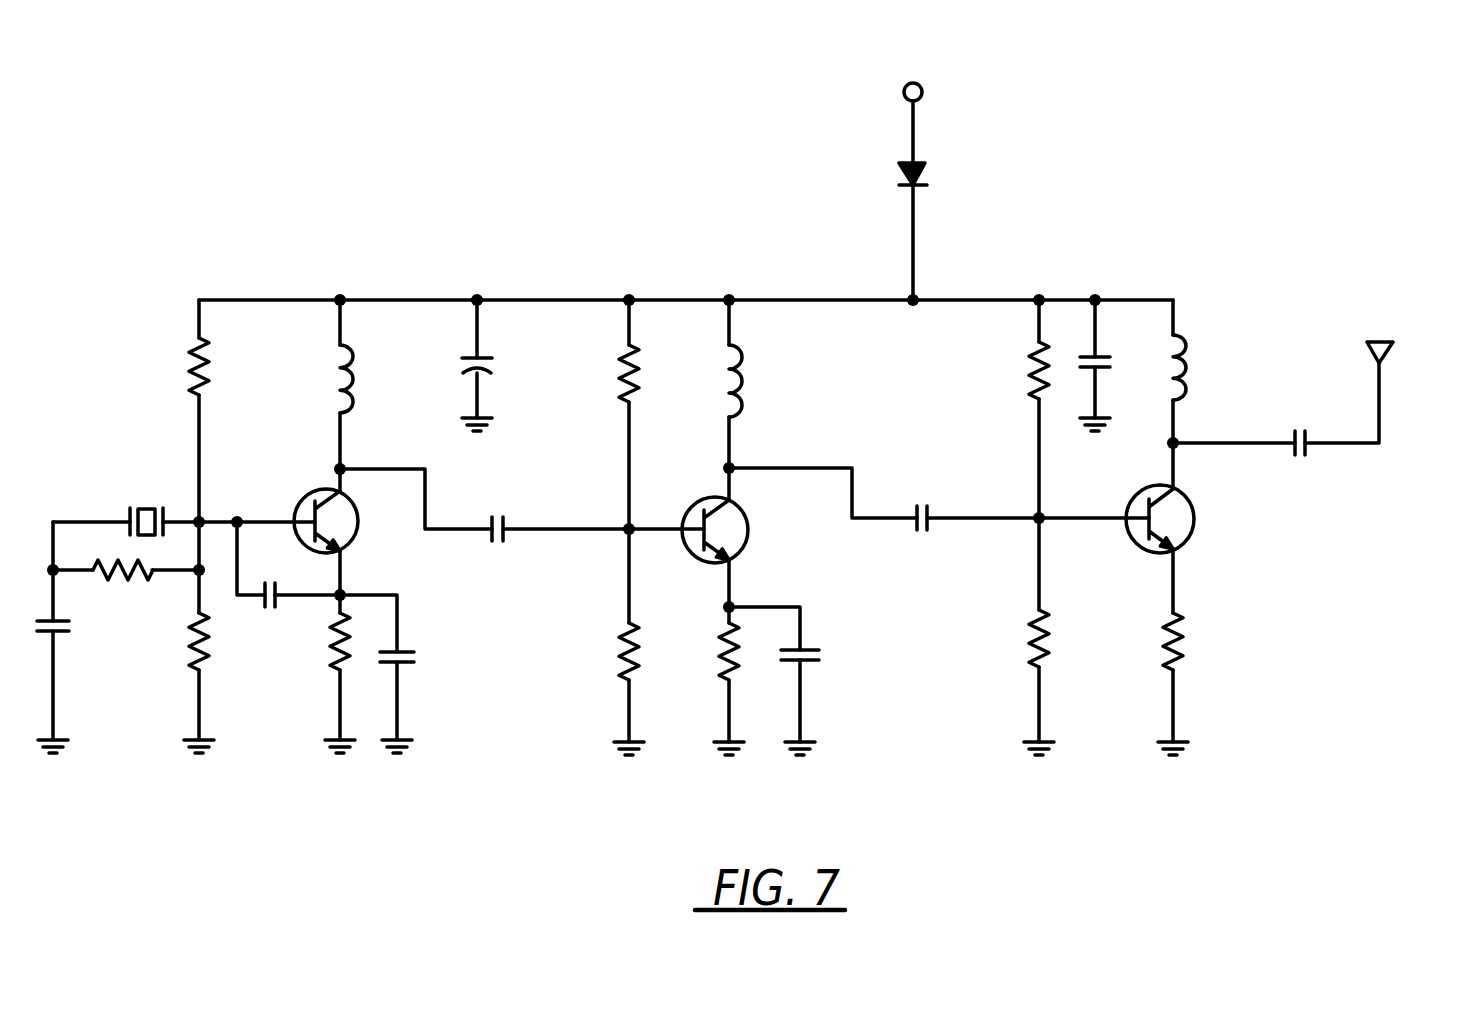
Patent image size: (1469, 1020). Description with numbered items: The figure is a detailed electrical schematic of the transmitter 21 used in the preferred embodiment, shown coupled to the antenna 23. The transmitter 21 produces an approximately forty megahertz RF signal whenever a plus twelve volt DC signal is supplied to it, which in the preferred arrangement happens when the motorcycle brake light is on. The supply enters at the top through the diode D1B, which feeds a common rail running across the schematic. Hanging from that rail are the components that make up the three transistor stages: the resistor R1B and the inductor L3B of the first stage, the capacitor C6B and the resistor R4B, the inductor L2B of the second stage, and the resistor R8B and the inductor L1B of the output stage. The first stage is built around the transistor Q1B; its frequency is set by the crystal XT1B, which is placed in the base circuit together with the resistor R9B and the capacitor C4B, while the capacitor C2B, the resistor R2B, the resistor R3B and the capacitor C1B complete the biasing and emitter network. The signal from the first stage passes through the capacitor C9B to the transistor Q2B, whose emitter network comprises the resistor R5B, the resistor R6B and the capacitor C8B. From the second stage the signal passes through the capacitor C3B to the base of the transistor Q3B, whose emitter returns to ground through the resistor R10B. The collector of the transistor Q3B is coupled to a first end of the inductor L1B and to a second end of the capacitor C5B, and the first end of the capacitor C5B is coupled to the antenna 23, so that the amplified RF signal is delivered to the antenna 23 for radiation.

The transmitter 21 is at (626, 157).
The antenna 23 is at (1380, 415).
The diode D1B is at (872, 179).
The resistor R1B is at (164, 366).
The inductor L3B is at (308, 379).
The capacitor C6B is at (506, 377).
The resistor R4B is at (597, 378).
The inductor L2B is at (779, 381).
The resistor R8B is at (998, 369).
The inductor L1B is at (1221, 364).
The capacitor C5B is at (1301, 425).
The crystal XT1B is at (126, 499).
The transistor Q1B is at (354, 530).
The capacitor C9B is at (502, 510).
The transistor Q2B is at (748, 533).
The capacitor C3B is at (930, 498).
The transistor Q3B is at (1194, 527).
The capacitor C2B is at (275, 578).
The resistor R9B is at (124, 589).
The capacitor C4B is at (83, 646).
The resistor R2B is at (237, 641).
The resistor R3B is at (302, 646).
The capacitor C1B is at (432, 659).
The resistor R5B is at (590, 651).
The resistor R6B is at (694, 647).
The capacitor C8B is at (838, 642).
The resistor R10B is at (1215, 641).